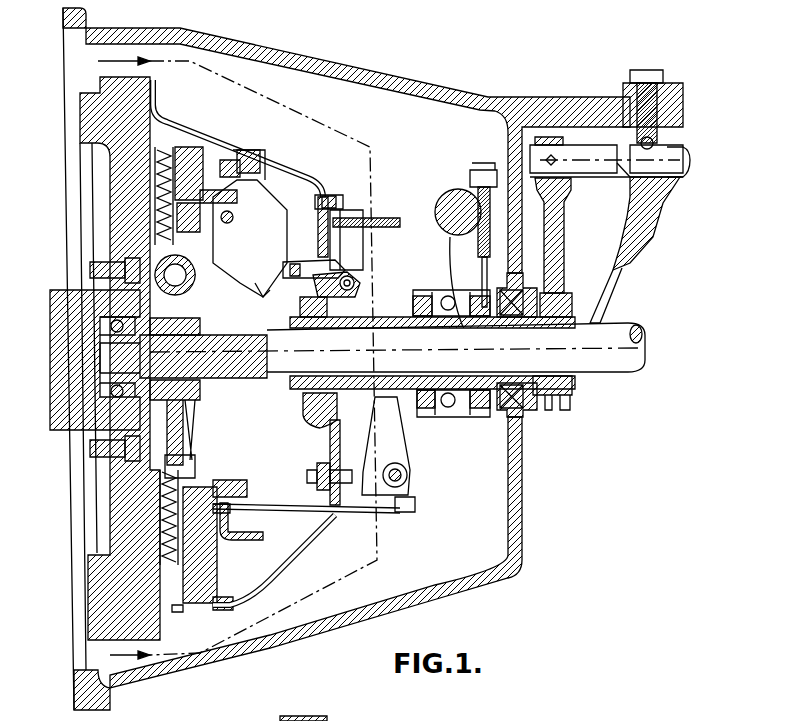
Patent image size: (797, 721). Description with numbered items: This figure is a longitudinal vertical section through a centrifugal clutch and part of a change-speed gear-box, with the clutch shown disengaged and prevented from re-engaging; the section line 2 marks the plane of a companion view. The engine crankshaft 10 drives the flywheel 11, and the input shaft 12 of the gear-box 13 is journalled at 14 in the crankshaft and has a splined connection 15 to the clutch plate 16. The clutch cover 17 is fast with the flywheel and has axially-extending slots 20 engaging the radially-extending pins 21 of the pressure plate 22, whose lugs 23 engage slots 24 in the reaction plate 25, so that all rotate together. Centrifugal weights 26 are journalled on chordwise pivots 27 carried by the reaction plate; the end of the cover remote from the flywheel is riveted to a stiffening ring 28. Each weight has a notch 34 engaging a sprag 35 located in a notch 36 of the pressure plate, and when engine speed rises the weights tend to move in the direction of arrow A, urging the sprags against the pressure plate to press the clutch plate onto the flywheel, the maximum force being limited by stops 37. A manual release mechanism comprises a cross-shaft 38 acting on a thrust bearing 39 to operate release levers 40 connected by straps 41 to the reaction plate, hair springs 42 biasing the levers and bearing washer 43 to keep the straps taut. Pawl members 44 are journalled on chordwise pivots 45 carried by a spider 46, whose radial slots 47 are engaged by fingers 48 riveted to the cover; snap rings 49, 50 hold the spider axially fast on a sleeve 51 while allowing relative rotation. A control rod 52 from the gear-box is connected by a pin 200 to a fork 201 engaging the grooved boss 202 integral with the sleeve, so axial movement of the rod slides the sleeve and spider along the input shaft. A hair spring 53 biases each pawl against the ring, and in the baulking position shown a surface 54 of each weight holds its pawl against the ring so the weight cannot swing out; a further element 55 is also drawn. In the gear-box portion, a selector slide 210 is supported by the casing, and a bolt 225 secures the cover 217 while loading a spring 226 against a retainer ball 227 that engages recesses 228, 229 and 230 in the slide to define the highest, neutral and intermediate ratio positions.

The section line 2- 2 is at (230, 358).
The crankshaft 10 is at (76, 427).
The flywheel 11 is at (100, 108).
The input shaft 12 is at (585, 346).
The gear-box 13 is at (570, 106).
The journal 14 is at (100, 320).
The splined connection 15 is at (200, 382).
The clutch plate 16 is at (168, 548).
The clutch cover 17 is at (326, 527).
The axially-extending slots 20 is at (172, 612).
The radially-extending pins 21 is at (200, 600).
The pressure plate 22 is at (222, 603).
The axially-extending lugs 23 is at (238, 480).
The slots 24 is at (230, 517).
The reaction plate 25 is at (228, 163).
The centrifugal weights 26 is at (262, 258).
The chordwise pivots 27 is at (232, 219).
The stiffening ring 28 is at (330, 197).
The notch 34 is at (230, 192).
The sprag 35 is at (210, 168).
The notch 36 is at (207, 194).
The stops 37 is at (242, 172).
The crossshaft 38 is at (460, 202).
The thrust bearing 39 is at (463, 410).
The clutch release levers 40 is at (398, 440).
The straps 41 is at (347, 508).
The hair springs 42 is at (402, 400).
The bearing washer 43 is at (420, 300).
The pawl members 44 is at (288, 267).
The chordwise pivots 45 is at (347, 280).
The spider 46 is at (325, 407).
The radially directed slots 47 is at (347, 247).
The fingers 48 is at (383, 222).
The snap ring 49 is at (298, 317).
The snap ring 50 is at (320, 320).
The sleeve 51 is at (537, 395).
The control rod 52 is at (577, 150).
The hair spring 53 is at (357, 293).
The surface 54 is at (293, 270).
The plate edge 55 is at (263, 296).
The pin 200 is at (550, 156).
The fork 201 is at (563, 247).
The annularly grooved boss 202 is at (570, 392).
The selector slide 210 is at (682, 173).
The cover 217 is at (630, 90).
The bolts 225 is at (657, 73).
The spring 226 is at (660, 127).
The retainer ball 227 is at (653, 143).
The recess 228 is at (637, 187).
The recess 229 is at (633, 173).
The recess 230 is at (617, 163).
The arrow A is at (292, 234).